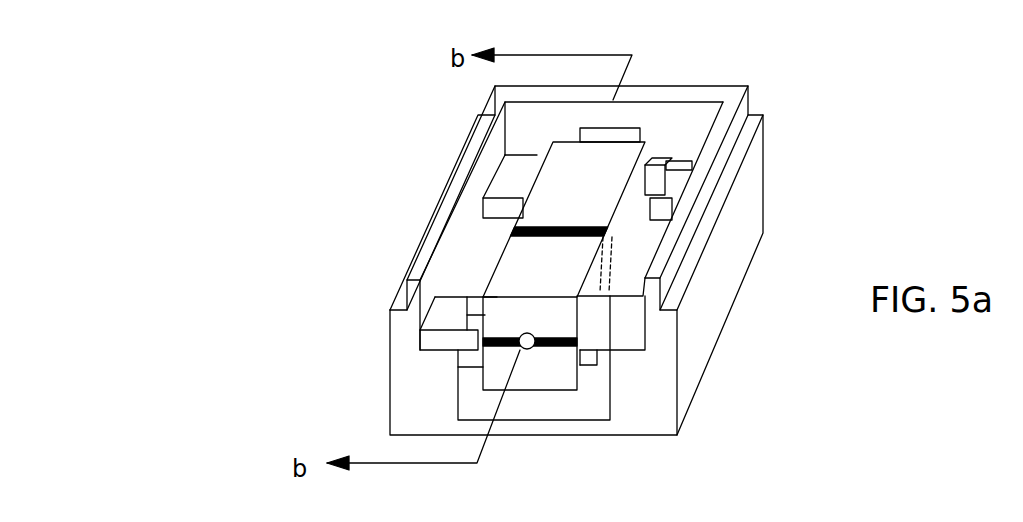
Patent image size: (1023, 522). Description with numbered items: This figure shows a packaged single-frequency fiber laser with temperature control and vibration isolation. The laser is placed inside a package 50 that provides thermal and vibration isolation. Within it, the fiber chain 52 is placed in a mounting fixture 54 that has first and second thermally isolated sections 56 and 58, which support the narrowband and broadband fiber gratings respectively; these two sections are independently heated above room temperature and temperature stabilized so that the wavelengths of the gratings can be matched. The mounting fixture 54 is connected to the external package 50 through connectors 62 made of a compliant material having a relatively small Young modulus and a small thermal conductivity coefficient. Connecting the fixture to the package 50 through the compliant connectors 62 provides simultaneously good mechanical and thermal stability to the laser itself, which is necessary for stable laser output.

The package 50 is at (422, 387).
The fiber chain 52 is at (535, 350).
The mounting fixture 54 is at (510, 183).
The first thermally isolated section 56 is at (503, 280).
The second thermally isolated section 58 is at (628, 172).
The connectors 62 is at (543, 213).